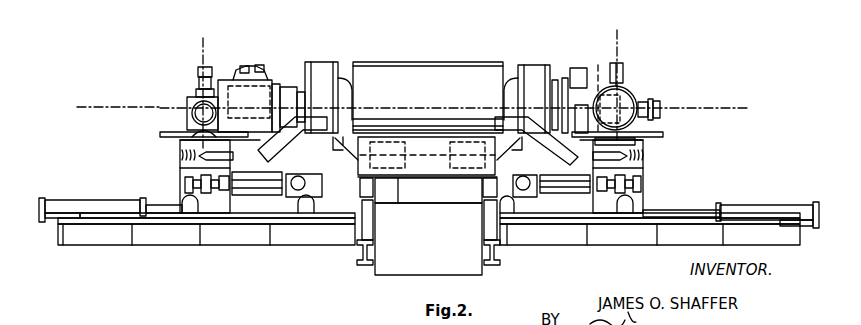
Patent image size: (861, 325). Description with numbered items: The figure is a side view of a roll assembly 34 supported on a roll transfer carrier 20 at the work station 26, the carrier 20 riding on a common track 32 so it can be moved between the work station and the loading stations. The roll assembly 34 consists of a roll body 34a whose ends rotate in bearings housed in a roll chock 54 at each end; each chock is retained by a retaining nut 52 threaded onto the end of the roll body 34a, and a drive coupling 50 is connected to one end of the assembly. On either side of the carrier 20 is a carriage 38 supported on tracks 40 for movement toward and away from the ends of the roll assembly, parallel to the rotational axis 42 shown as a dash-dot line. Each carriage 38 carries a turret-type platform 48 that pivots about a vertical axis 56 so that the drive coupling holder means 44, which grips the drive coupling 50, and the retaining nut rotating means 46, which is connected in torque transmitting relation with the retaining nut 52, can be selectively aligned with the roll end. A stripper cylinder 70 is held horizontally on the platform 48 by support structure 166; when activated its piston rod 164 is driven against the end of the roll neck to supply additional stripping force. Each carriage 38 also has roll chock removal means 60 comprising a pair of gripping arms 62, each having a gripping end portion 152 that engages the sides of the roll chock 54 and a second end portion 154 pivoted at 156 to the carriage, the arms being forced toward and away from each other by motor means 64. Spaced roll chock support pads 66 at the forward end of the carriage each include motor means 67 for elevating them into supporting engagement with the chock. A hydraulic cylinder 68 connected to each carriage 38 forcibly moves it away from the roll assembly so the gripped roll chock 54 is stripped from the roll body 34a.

The roll transfer carrier 20 is at (435, 190).
The work station 26 is at (100, 107).
The track 32 is at (373, 245).
The roll assembly 34 is at (485, 62).
The roll body 34a is at (413, 67).
The carriage 38 is at (118, 147).
The tracks 40 is at (115, 212).
The rotational axis 42 is at (447, 110).
The drive coupling holder means 44 is at (262, 66).
The retaining nut rotating means 46 is at (190, 92).
The turret-type platform 48 is at (160, 134).
The drive coupling 50 is at (276, 102).
The retaining nut 52 is at (290, 97).
The roll chock 54 is at (320, 67).
The vertical axis 56 is at (203, 52).
The roll chock removal means 60 is at (338, 104).
The gripping arms 62 is at (357, 122).
The motor means 64 is at (180, 162).
The roll chock support pads 66 is at (302, 183).
The motor means 67 is at (306, 188).
The hydraulic cylinder 68 is at (62, 198).
The stripper cylinder 70 is at (190, 117).
The gripping end portion 152 is at (312, 140).
The second end portion 154 is at (230, 187).
The pivot 156 is at (185, 132).
The piston rod 164 is at (593, 88).
The support structure 166 is at (185, 102).